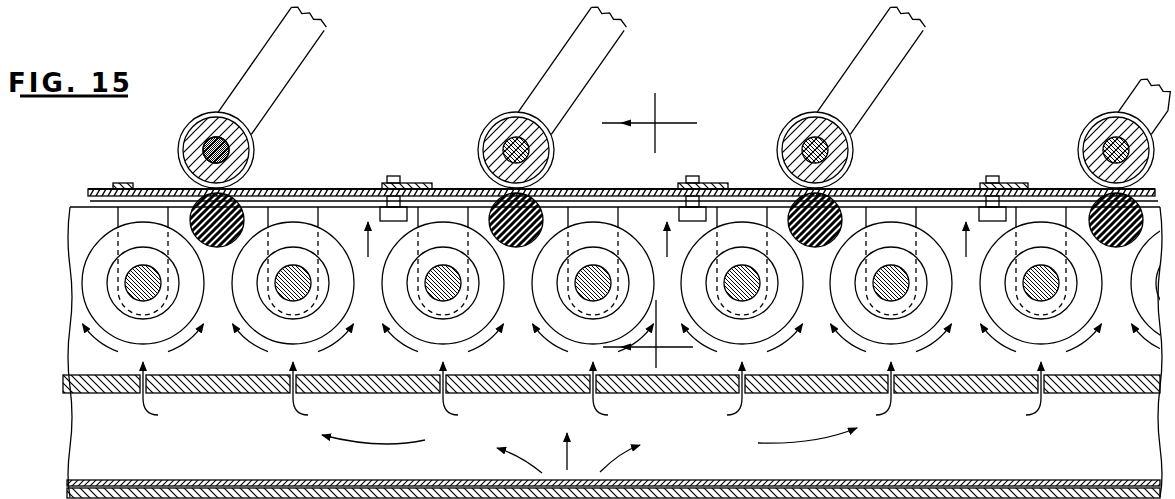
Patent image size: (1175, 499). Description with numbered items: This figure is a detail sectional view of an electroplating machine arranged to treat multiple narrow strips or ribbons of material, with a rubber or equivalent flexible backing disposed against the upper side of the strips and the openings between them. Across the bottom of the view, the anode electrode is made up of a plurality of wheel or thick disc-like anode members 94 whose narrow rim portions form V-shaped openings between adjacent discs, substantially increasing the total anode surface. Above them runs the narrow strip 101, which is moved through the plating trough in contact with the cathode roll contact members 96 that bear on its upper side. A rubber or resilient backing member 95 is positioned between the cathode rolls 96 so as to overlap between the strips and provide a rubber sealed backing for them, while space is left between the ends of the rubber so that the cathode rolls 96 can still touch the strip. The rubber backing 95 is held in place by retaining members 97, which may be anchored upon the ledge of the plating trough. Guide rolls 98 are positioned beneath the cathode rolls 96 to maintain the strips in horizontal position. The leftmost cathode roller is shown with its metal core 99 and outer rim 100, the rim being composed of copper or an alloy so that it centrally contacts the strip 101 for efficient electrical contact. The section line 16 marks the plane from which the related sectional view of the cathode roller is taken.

The section line 16- 16 is at (642, 231).
The anode disc members 94 is at (277, 342).
The rubber backing member 95 is at (322, 187).
The cathode roll contact members 96 is at (258, 142).
The backing retaining members 97 is at (391, 175).
The guide rolls 98 is at (192, 226).
The metal core 99 is at (202, 152).
The outer rim 100 is at (235, 95).
The narrow strip 101 is at (96, 189).